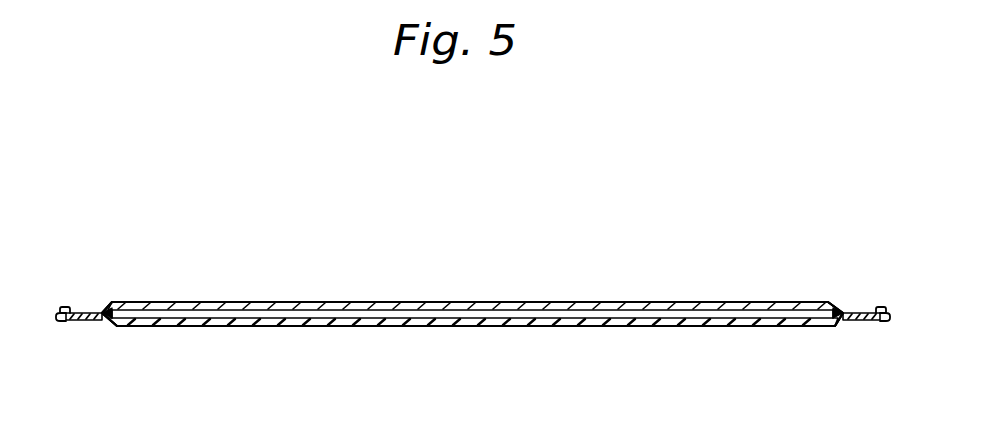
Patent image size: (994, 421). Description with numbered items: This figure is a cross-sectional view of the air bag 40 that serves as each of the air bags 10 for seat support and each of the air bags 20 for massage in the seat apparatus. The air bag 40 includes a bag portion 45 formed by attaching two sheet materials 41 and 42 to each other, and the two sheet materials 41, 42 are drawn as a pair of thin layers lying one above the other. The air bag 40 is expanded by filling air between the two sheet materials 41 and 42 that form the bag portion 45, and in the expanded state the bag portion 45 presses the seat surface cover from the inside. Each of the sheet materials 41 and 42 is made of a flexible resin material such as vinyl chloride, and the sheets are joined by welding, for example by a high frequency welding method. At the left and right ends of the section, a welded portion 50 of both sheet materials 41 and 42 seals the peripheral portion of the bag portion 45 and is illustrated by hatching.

The air bag 40 is at (180, 179).
The air bag for seat support 10 is at (472, 314).
The air bag for massage 20 is at (472, 314).
The sheet material 42 is at (558, 302).
The sheet material 41 is at (545, 328).
The bag portion 45 is at (295, 302).
The welded portion 50 is at (101, 311).